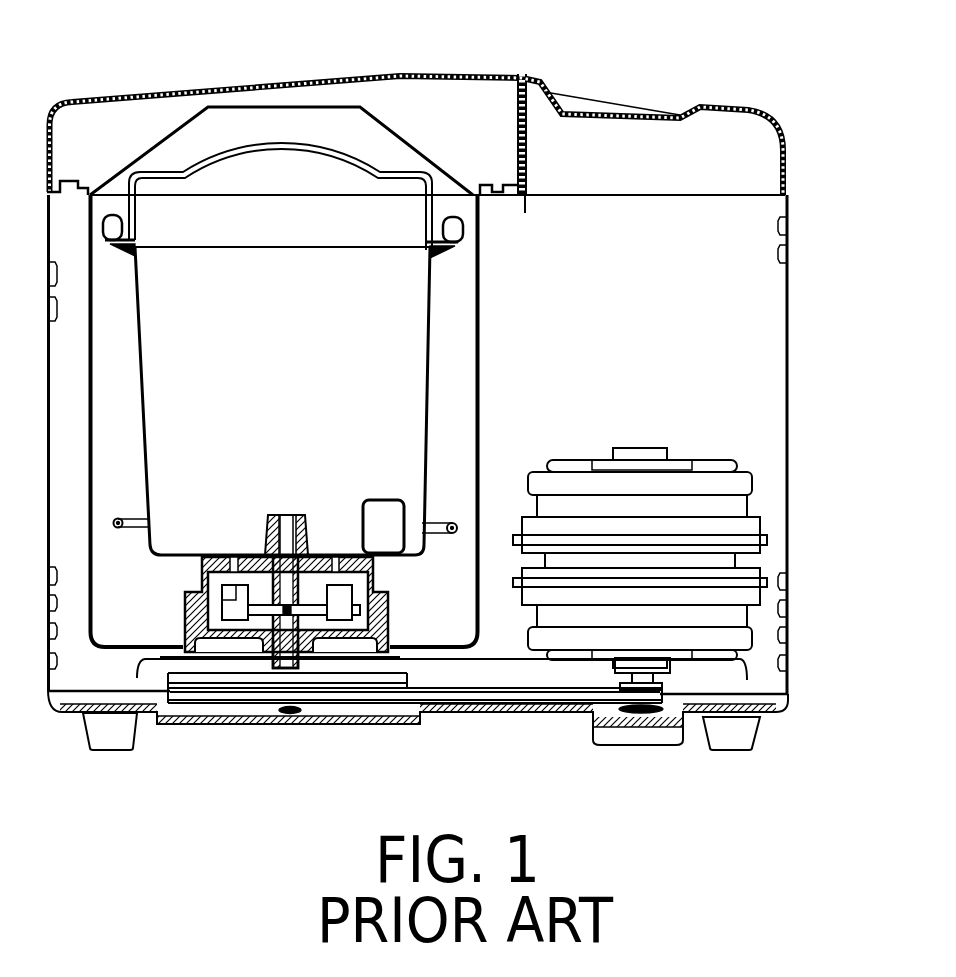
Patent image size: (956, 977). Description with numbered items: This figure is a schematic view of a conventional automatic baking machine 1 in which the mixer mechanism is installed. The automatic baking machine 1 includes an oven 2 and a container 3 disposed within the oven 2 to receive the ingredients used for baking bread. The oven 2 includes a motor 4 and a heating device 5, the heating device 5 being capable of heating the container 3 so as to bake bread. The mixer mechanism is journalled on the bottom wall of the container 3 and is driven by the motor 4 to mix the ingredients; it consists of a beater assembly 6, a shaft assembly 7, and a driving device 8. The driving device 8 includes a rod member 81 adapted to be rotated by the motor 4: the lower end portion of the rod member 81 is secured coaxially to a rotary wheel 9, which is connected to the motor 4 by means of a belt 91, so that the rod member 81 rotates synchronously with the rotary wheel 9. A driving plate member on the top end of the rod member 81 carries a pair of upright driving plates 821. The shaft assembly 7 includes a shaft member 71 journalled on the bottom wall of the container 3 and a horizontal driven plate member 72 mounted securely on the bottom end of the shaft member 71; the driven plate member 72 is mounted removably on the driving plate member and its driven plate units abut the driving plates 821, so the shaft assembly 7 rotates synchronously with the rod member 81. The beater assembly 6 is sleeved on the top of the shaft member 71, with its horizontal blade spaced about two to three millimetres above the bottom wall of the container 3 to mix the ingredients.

The automatic baking machine 1 is at (440, 73).
The oven 2 is at (477, 279).
The container 3 is at (430, 344).
The motor 4 is at (705, 458).
The heating device 5 is at (456, 521).
The beater assembly 6 is at (305, 515).
The shaft assembly 7 is at (290, 513).
The shaft member 71 is at (283, 535).
The driven plate member 72 is at (228, 610).
The driving device 8 is at (370, 618).
The rod member 81 is at (290, 653).
The driving plates 821 is at (345, 594).
The rotary wheel 9 is at (397, 704).
The belt 91 is at (503, 694).